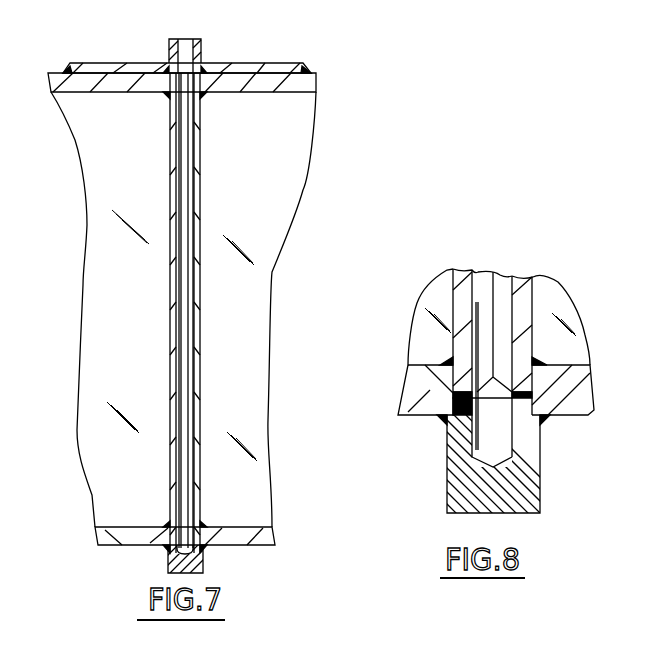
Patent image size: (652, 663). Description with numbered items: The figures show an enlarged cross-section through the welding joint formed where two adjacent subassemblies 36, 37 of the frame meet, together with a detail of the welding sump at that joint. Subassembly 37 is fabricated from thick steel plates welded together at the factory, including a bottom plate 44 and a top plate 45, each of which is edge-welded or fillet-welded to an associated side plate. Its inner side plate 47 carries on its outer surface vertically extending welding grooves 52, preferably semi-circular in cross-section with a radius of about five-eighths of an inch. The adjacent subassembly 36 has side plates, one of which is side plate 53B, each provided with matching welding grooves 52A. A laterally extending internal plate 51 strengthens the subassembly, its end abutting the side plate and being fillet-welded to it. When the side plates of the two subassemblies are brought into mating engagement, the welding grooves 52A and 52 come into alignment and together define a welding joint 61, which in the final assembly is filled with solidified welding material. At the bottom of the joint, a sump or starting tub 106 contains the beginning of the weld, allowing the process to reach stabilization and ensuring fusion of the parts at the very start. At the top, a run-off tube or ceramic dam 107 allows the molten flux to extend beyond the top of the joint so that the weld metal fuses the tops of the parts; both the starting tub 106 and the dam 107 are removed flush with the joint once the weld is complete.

In FIG. 7, the subassembly 36 is at (96, 64).
In FIG. 8, the subassembly 36 is at (403, 404).
In FIG. 7, the subassembly 37 is at (318, 80).
In FIG. 8, the subassembly 37 is at (580, 387).
In FIG. 7, the bottom plate 44 is at (110, 542).
In FIG. 8, the bottom plate 44 is at (435, 408).
In FIG. 7, the top plate 45 is at (265, 80).
In FIG. 7, the inner side plate 47 is at (199, 352).
In FIG. 8, the inner side plate 47 is at (533, 287).
In FIG. 7, the laterally extending plate 51 is at (132, 287).
In FIG. 8, the laterally extending plate 51 is at (499, 317).
In FIG. 7, the welding groove 52 is at (190, 386).
In FIG. 8, the welding groove 52 is at (508, 313).
In FIG. 7, the welding groove 52A is at (183, 368).
In FIG. 8, the welding groove 52A is at (474, 300).
In FIG. 7, the side plate 53B is at (176, 328).
In FIG. 8, the side plate 53B is at (470, 288).
In FIG. 7, the welding joint 61 is at (186, 143).
In FIG. 8, the welding joint 61 is at (505, 345).
In FIG. 7, the sump or starting tub 106 is at (170, 560).
In FIG. 8, the sump or starting tub 106 is at (448, 467).
In FIG. 7, the run-off tube or ceramic dam 107 is at (168, 52).